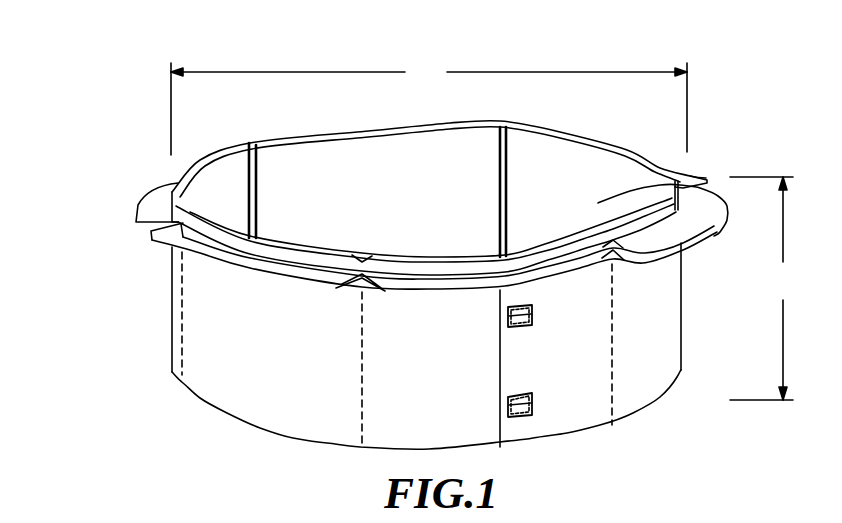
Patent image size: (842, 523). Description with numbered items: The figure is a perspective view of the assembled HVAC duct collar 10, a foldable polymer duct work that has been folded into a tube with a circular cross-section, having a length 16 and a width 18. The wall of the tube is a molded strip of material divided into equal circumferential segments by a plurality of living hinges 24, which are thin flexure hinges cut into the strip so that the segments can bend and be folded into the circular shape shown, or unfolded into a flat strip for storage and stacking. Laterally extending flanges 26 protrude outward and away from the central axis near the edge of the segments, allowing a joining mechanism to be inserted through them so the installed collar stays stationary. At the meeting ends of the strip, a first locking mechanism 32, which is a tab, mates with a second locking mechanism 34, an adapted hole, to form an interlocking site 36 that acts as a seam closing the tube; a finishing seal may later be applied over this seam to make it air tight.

The HVAC duct collar 10 is at (90, 99).
The length 16 is at (763, 288).
The width 18 is at (429, 108).
The living hinge 24 is at (250, 143).
The flange 26 is at (138, 207).
The first locking mechanism 32 is at (515, 318).
The second locking mechanism 34 is at (520, 306).
The interlocking site 36 is at (500, 362).